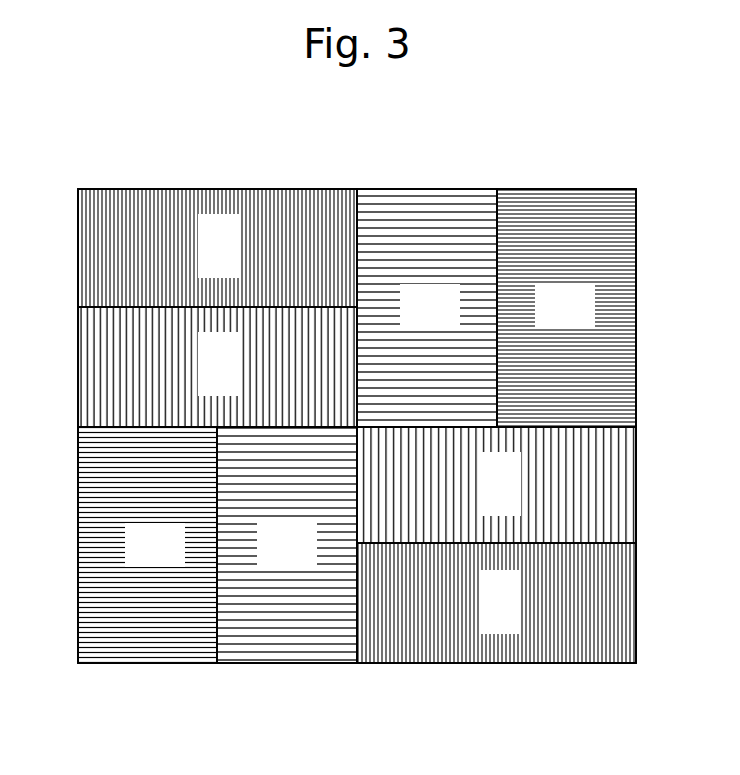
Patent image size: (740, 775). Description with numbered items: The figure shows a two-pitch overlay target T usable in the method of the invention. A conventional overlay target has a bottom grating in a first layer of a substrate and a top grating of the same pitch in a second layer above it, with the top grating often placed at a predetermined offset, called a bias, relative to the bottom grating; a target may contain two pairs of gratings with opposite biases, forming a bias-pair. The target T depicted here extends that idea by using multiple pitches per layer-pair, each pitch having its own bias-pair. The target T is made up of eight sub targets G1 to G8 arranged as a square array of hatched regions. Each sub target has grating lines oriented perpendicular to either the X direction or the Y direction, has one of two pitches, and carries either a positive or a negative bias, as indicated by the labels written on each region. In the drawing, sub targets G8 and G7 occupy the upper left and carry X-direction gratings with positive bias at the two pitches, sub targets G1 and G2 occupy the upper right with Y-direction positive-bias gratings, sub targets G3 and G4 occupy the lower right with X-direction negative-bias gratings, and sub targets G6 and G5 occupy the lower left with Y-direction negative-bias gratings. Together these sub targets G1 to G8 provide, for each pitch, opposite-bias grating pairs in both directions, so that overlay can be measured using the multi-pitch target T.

The two-pitch target T is at (86, 158).
The sub target G1 is at (422, 193).
The sub target G2 is at (583, 195).
The sub target G3 is at (625, 475).
The sub target G4 is at (622, 594).
The sub target G5 is at (290, 657).
The sub target G6 is at (157, 657).
The sub target G7 is at (88, 355).
The sub target G8 is at (250, 194).